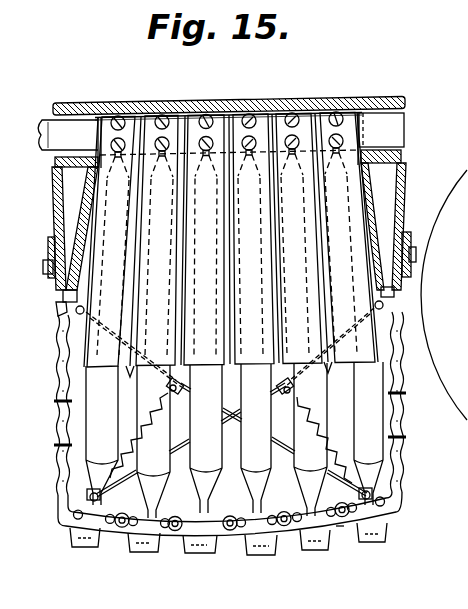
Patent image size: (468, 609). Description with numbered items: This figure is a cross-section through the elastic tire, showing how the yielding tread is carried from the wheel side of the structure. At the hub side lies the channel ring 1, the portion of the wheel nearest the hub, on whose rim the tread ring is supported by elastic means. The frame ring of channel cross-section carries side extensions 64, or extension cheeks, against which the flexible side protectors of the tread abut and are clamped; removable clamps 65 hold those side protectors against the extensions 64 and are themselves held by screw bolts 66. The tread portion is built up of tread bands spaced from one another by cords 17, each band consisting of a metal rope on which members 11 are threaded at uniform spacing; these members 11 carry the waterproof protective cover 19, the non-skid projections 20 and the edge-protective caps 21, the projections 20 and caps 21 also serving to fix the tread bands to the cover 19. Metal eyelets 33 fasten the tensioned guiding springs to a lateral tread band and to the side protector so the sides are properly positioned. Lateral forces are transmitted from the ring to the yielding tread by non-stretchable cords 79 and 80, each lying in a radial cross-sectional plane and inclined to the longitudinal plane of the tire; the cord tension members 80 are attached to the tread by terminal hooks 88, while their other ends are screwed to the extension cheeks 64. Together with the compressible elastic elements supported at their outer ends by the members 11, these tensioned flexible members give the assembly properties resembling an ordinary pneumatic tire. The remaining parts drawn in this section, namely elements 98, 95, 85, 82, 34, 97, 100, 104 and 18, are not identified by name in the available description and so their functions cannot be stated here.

The screws 98 is at (205, 114).
The frame rail 95 is at (43, 128).
The side extensions 64 is at (80, 188).
The removable clamps 65 is at (50, 237).
The screw bolts 66 is at (47, 262).
The pivot bracket 85 is at (64, 298).
The pivot pin 82 is at (376, 303).
The flexible hose 34 is at (57, 400).
The metal eyelets 33 is at (58, 444).
The edge-protective caps 21 is at (54, 520).
The cords 17 is at (120, 524).
The terminal hooks 88 is at (101, 500).
The members 11 is at (177, 516).
The sprocket 104 is at (230, 516).
The sprocket 18 is at (284, 512).
The non-skid projections 20 is at (93, 544).
The waterproof protective cover 19 is at (340, 526).
The funnel 100 is at (76, 430).
The link block with spring 97 is at (130, 375).
The cords 79 is at (276, 443).
The cords 80 is at (205, 447).
The channel ring 1 is at (447, 300).